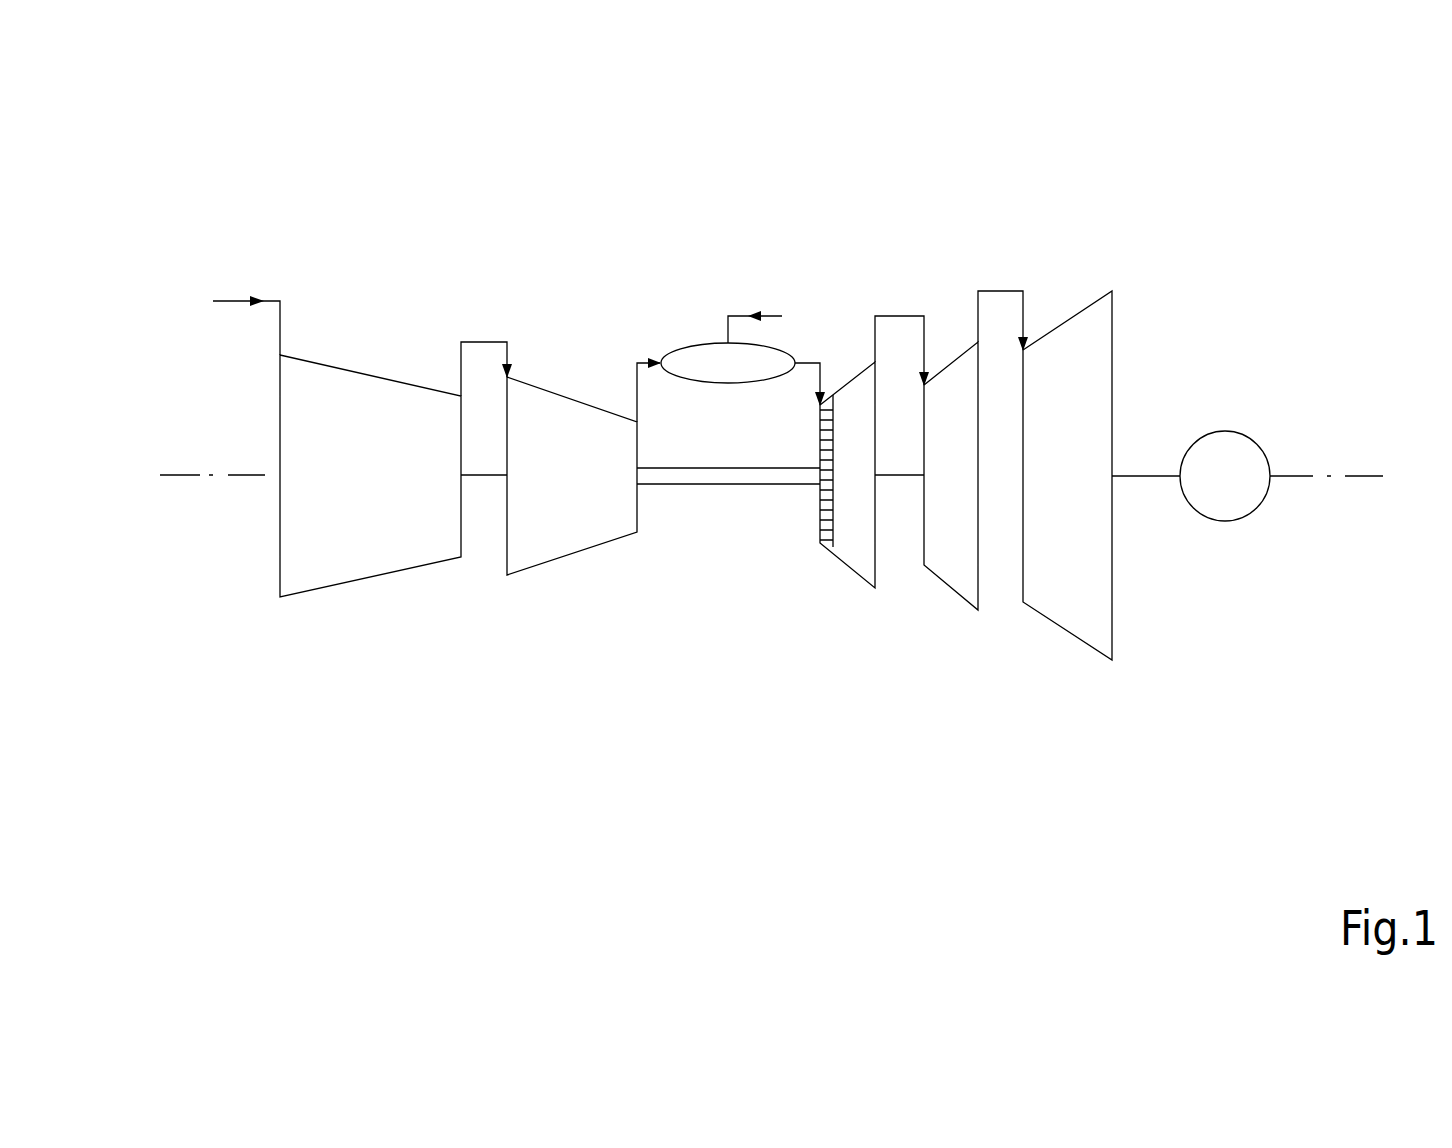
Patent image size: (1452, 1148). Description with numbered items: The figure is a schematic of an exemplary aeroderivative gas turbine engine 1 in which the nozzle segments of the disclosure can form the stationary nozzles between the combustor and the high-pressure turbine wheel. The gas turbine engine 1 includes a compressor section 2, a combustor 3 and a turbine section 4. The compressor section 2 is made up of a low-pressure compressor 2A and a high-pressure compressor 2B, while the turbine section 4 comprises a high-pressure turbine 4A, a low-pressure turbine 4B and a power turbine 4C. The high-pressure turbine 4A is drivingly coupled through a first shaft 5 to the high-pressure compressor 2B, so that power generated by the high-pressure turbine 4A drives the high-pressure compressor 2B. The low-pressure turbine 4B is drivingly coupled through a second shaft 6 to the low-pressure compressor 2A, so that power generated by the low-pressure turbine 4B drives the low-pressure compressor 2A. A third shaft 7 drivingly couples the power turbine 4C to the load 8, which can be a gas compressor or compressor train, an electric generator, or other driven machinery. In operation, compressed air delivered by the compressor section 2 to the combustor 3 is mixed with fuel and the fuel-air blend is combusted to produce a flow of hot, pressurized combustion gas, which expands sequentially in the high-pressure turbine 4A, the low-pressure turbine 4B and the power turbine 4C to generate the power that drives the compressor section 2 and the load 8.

The gas turbine engine 1 is at (712, 111).
The compressor section 2 is at (632, 690).
The low-pressure compressor 2A is at (362, 383).
The high-pressure compressor 2B is at (570, 406).
The combustor 3 is at (701, 350).
The turbine section 4 is at (1110, 220).
The high-pressure turbine 4A is at (851, 394).
The low-pressure turbine 4B is at (952, 364).
The power turbine 4C is at (1064, 330).
The first shaft 5 is at (738, 480).
The second shaft 6 is at (483, 479).
The third shaft 7 is at (1145, 473).
The load 8 is at (1233, 441).